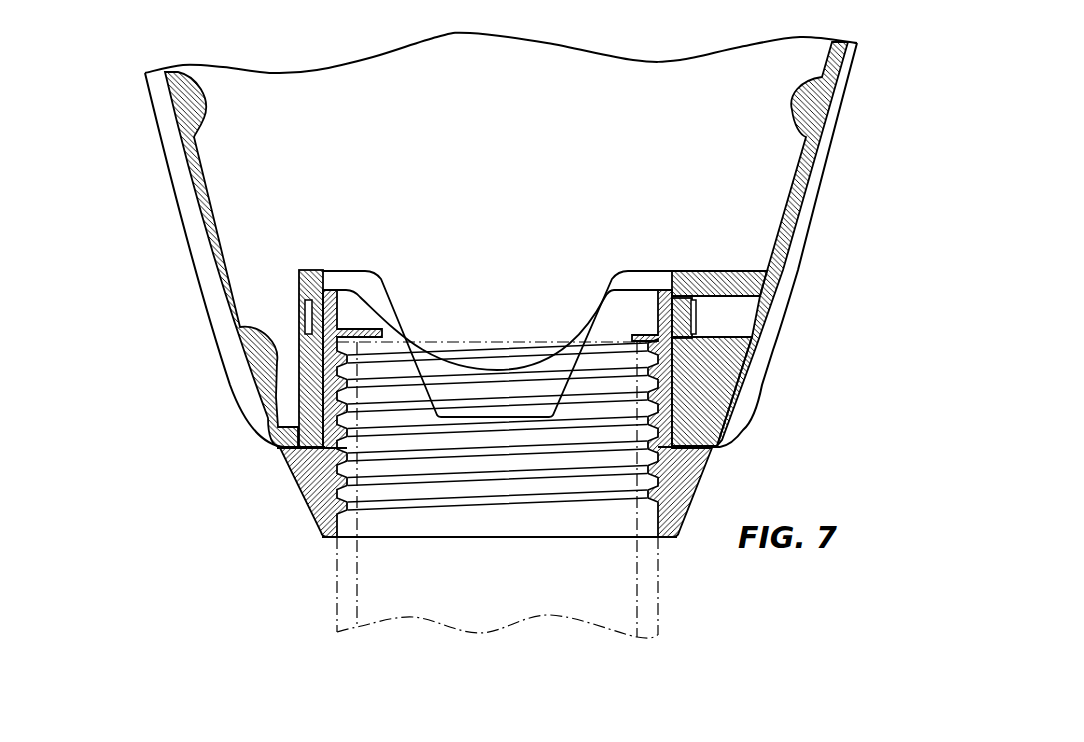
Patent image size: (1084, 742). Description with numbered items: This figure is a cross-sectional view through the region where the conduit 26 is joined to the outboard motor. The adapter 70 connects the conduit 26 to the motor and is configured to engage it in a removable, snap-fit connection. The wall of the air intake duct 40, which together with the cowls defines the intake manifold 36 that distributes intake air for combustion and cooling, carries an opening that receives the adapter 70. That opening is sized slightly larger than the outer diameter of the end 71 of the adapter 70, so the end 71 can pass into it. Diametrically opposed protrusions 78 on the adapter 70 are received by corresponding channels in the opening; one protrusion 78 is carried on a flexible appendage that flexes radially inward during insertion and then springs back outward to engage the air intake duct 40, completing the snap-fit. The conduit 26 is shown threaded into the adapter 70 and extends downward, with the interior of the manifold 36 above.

The conduit 26 is at (337, 580).
The intake manifold 36 is at (509, 232).
The air intake duct 40 is at (813, 193).
The adapter 70 is at (313, 490).
The end of the adapter 71 is at (307, 373).
The protrusions 78 is at (313, 310).